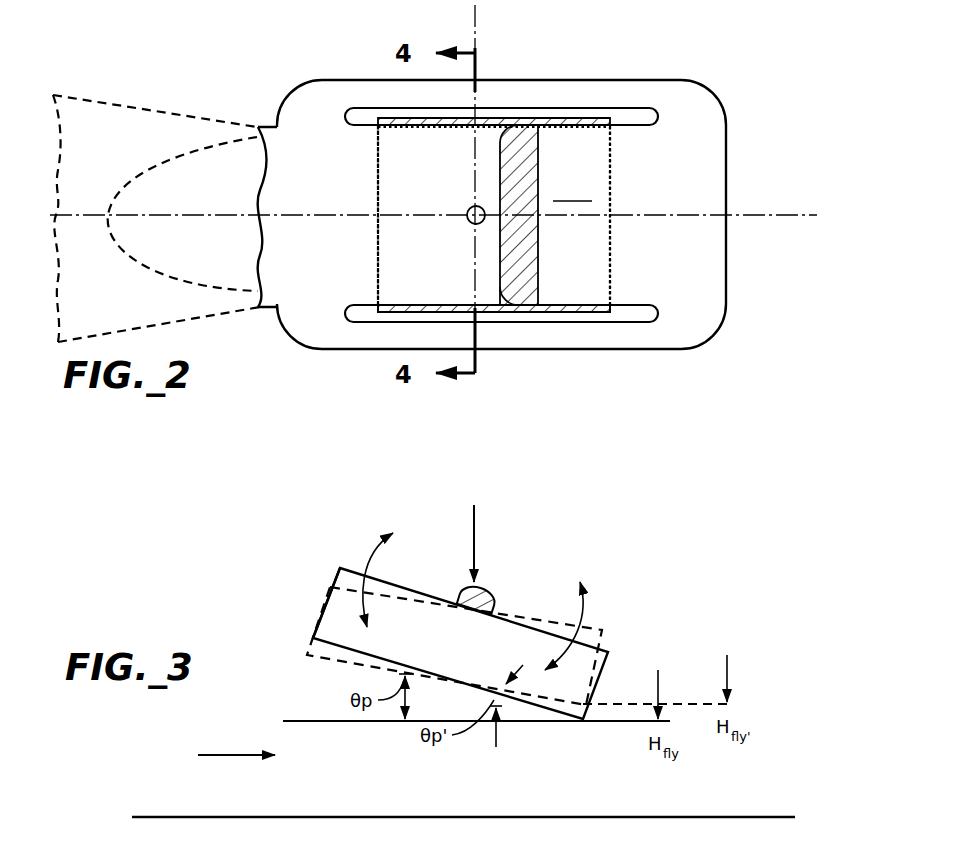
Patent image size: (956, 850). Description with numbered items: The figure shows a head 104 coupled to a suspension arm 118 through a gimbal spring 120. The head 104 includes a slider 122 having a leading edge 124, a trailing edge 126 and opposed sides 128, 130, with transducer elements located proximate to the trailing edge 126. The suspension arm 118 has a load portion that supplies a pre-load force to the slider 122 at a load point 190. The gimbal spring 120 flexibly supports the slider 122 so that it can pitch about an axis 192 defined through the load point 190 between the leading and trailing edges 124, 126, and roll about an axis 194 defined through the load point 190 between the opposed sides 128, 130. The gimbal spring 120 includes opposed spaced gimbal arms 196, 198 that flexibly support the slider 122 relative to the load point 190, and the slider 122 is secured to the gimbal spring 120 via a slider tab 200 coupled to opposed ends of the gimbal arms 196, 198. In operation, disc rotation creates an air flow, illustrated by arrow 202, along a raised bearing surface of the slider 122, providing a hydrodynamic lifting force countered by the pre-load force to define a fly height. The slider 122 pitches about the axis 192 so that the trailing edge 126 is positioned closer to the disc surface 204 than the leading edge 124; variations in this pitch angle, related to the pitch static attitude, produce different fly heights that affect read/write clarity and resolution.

In FIG. 2, the head 104 is at (667, 66).
In FIG. 2, the suspension arm 118 is at (138, 98).
In FIG. 2, the gimbal spring 120 is at (715, 287).
In FIG. 2, the slider 122 is at (520, 242).
In FIG. 3, the slider 122 is at (596, 668).
In FIG. 2, the leading edge 124 is at (376, 265).
In FIG. 3, the leading edge 124 is at (331, 588).
In FIG. 2, the trailing edge 126 is at (610, 172).
In FIG. 3, the trailing edge 126 is at (604, 670).
In FIG. 2, the opposed side 128 is at (525, 118).
In FIG. 2, the opposed side 130 is at (517, 314).
In FIG. 2, the load point 190 is at (469, 222).
In FIG. 2, the pitch axis 192 is at (476, 16).
In FIG. 3, the pitch axis 192 is at (481, 585).
In FIG. 2, the roll axis 194 is at (802, 210).
In FIG. 2, the gimbal arm 196 is at (377, 90).
In FIG. 2, the gimbal arm 198 is at (658, 333).
In FIG. 2, the slider tab 200 is at (572, 190).
In FIG. 3, the air flow arrow 202 is at (240, 755).
In FIG. 3, the disc surface 204 is at (436, 817).